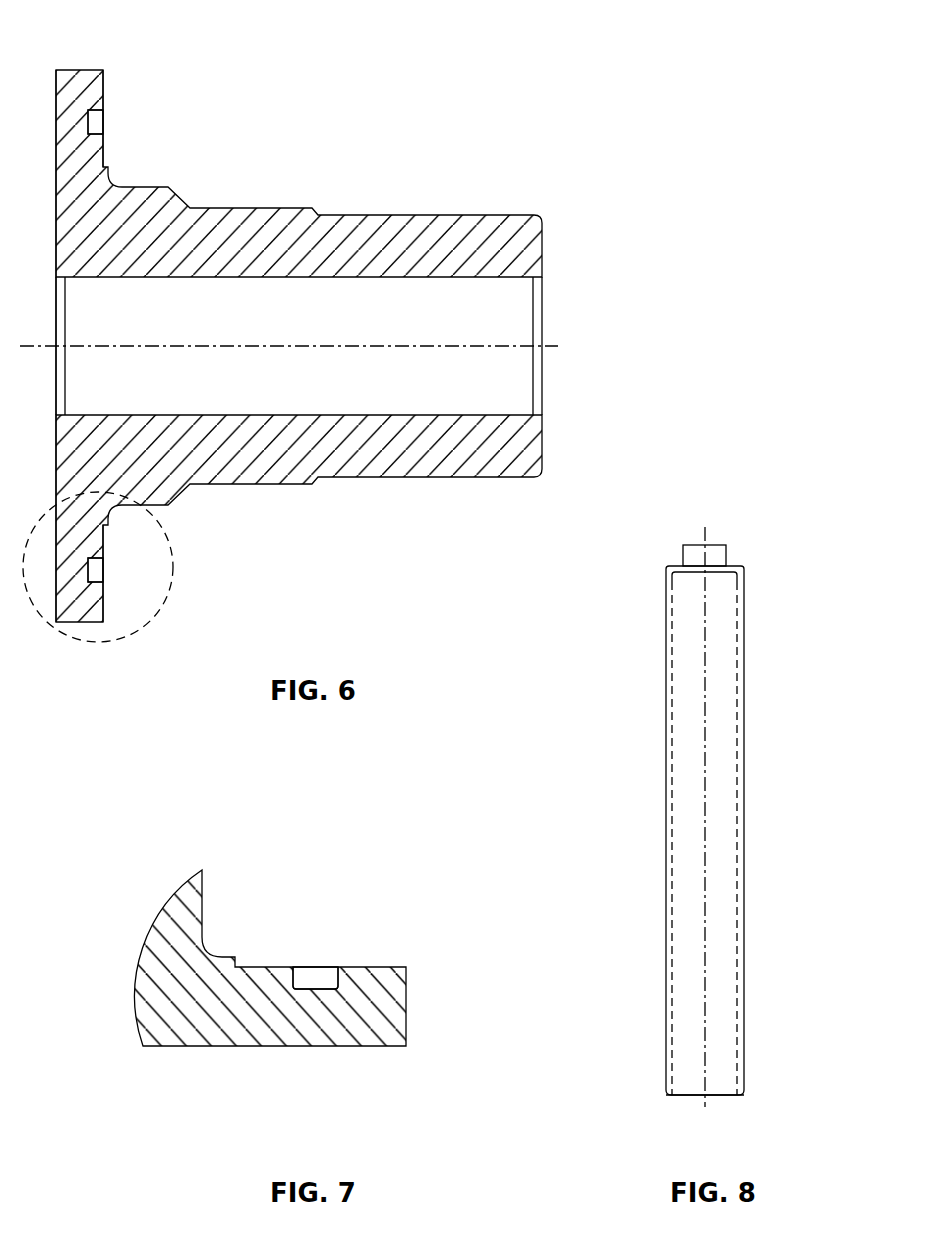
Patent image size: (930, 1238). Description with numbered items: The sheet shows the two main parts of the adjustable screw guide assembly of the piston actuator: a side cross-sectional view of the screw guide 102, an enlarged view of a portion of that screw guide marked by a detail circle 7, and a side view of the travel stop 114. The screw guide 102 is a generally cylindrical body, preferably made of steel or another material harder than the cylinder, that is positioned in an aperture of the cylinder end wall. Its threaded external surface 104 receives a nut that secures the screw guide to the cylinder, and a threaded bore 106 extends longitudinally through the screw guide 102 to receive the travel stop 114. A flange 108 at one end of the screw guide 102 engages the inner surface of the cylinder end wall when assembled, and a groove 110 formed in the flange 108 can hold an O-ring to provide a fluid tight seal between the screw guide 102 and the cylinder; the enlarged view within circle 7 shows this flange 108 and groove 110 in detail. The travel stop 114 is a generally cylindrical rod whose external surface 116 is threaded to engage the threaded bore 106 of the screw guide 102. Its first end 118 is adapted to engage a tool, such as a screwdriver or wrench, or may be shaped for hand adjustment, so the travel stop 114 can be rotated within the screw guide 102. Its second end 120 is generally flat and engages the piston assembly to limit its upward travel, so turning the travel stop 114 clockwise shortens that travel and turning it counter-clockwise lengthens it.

In FIG. 6, the screw guide 102 is at (578, 208).
In FIG. 6, the threaded external surface 104 is at (472, 222).
In FIG. 6, the threaded bore 106 is at (512, 278).
In FIG. 6, the flange 108 is at (73, 87).
In FIG. 7, the flange 108 is at (395, 1030).
In FIG. 6, the groove 110 is at (102, 125).
In FIG. 7, the groove 110 is at (306, 975).
In FIG. 6, the detail circle of FIG. 7 is at (138, 633).
In FIG. 8, the travel stop 114 is at (648, 622).
In FIG. 8, the external surface 116 is at (745, 767).
In FIG. 8, the first end 118 is at (690, 545).
In FIG. 8, the second end 120 is at (733, 1097).